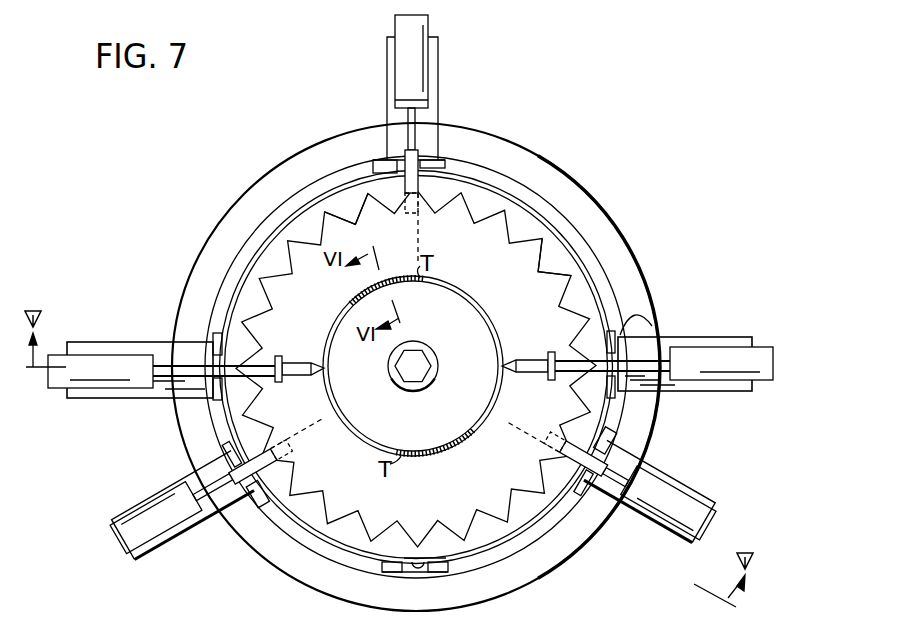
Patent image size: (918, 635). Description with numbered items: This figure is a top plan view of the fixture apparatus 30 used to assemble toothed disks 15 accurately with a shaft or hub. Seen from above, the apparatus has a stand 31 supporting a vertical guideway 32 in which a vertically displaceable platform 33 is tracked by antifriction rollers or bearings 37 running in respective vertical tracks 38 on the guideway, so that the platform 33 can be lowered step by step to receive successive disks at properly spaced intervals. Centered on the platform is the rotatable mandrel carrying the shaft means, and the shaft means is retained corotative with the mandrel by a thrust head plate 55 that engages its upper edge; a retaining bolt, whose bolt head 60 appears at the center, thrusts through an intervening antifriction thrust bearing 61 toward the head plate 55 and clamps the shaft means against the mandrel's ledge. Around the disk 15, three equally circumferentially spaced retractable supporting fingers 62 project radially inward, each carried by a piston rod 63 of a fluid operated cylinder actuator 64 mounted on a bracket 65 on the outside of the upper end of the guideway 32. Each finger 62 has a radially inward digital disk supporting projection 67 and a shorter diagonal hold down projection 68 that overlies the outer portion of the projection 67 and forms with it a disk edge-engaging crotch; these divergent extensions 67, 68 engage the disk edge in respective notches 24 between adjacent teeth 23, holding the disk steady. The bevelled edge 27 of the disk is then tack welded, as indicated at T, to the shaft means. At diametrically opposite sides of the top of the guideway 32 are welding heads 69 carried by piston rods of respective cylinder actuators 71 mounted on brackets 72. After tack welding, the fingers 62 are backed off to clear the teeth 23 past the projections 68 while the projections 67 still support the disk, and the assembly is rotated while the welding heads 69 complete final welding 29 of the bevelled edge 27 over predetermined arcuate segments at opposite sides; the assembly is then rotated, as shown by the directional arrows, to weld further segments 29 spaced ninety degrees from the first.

The disk 15 is at (256, 291).
The teeth 23 is at (300, 210).
The notches 24 is at (570, 250).
The bevelled edge 27 is at (470, 297).
The final welding segments 29 is at (370, 296).
The fixture apparatus 30 is at (287, 141).
The stand 31 is at (646, 259).
The vertical guideway 32 is at (487, 568).
The platform 33 is at (600, 330).
The antifriction rollers or bearings 37 is at (418, 558).
The vertical tracks 38 is at (387, 162).
The thrust head plate 55 is at (375, 426).
The hex bolt head 60 is at (428, 380).
The antifriction thrust bearing 61 is at (434, 360).
The retractable supporting fingers 62 is at (420, 150).
The piston rods 63 is at (409, 128).
The cylinder actuators 64 is at (430, 62).
The brackets 65 is at (388, 64).
The digital disk supporting projection 67 is at (422, 232).
The hold down projection 68 is at (410, 200).
The welding heads 69 is at (546, 362).
The cylinder actuators 71 is at (768, 357).
The brackets 72 is at (695, 391).